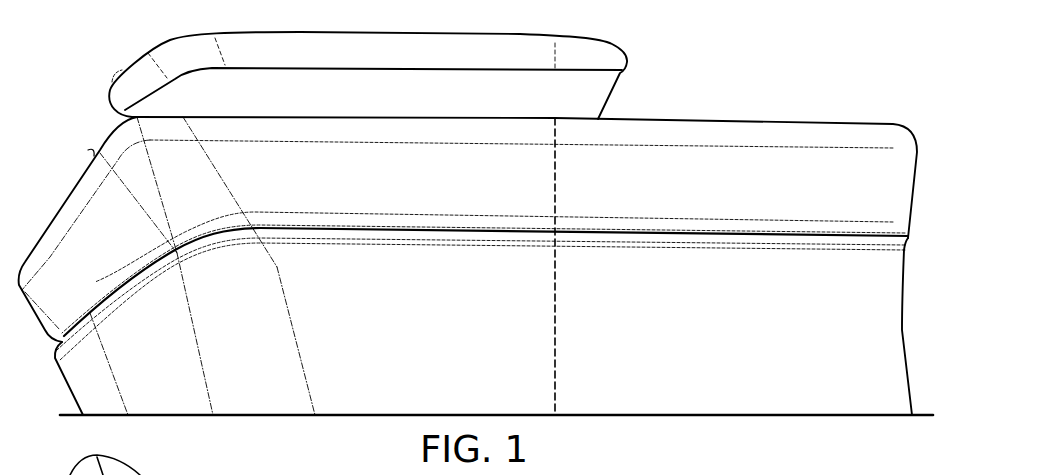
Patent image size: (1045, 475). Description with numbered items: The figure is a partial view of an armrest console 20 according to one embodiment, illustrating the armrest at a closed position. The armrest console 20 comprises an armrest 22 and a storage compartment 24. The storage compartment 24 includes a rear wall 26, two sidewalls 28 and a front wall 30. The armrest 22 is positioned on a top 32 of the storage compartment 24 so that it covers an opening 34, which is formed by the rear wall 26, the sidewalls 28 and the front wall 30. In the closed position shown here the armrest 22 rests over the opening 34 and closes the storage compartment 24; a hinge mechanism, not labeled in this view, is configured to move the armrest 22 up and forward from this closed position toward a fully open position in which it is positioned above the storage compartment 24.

The armrest console 20 is at (713, 52).
The armrest 22 is at (180, 75).
The storage compartment 24 is at (497, 297).
The rear wall 26 is at (118, 362).
The sidewalls 28 is at (363, 336).
The front wall 30 is at (556, 350).
The top 32 is at (79, 175).
The opening 34 is at (400, 196).